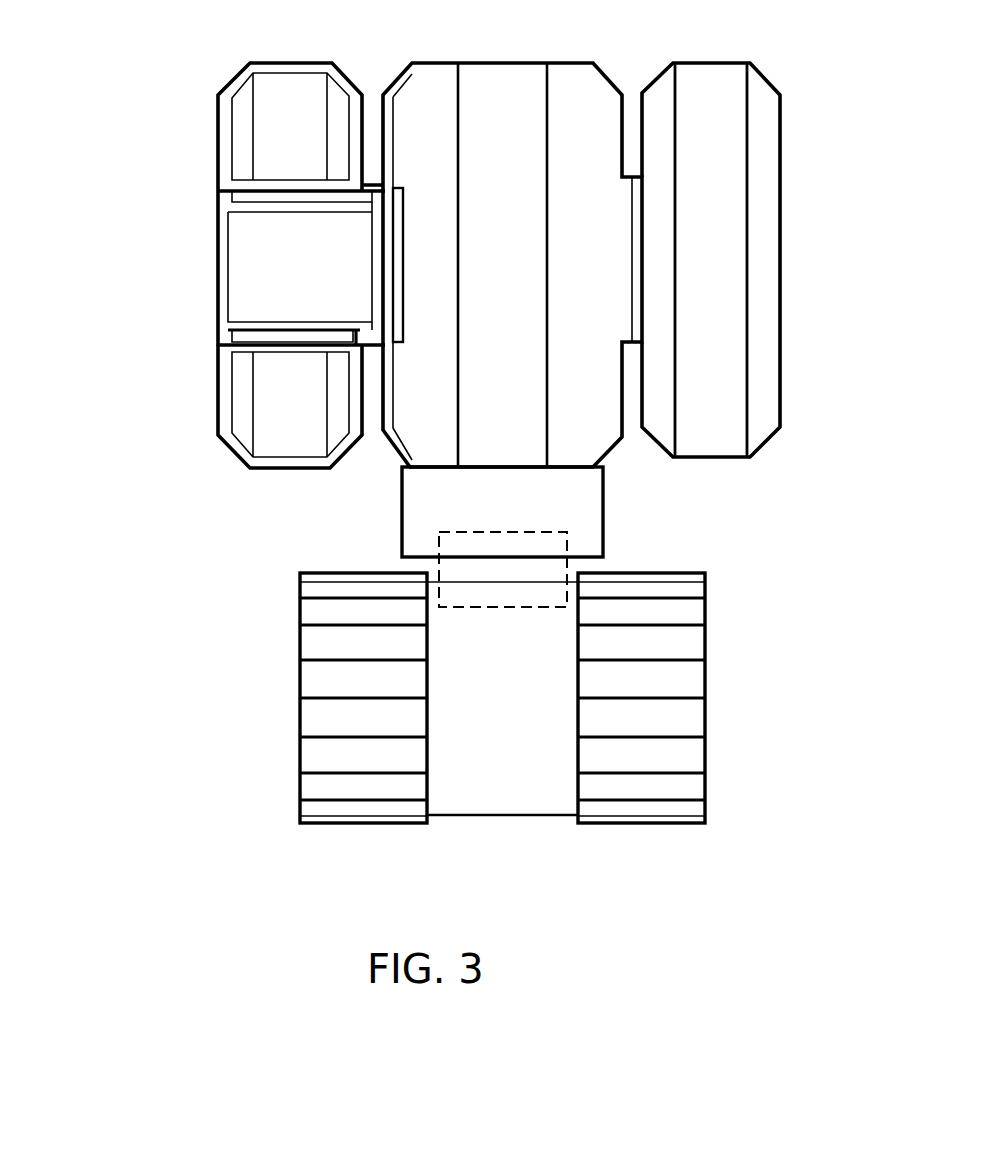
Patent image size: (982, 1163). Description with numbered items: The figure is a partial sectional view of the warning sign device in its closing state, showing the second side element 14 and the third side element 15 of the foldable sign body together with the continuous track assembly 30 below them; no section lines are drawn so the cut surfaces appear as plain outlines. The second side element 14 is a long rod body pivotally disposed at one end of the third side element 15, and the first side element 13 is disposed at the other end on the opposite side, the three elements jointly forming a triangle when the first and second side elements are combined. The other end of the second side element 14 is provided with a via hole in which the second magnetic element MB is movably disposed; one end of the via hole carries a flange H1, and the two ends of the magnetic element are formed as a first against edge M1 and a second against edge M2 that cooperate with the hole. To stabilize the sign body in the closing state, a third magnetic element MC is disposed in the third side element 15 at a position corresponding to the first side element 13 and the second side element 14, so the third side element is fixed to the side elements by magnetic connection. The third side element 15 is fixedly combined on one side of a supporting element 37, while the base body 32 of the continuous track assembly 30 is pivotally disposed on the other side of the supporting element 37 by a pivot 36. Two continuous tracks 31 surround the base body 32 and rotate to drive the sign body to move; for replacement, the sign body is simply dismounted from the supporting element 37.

The first side element 13 is at (725, 63).
The second side element 14 is at (280, 63).
The third side element 15 is at (513, 63).
The flange H1 is at (372, 426).
The second against edge M2 is at (367, 200).
The second magnetic element MB is at (227, 300).
The first against edge M1 is at (237, 337).
The third magnetic element MC is at (400, 313).
The supporting element 37 is at (590, 497).
The pivot 36 is at (567, 558).
The continuous track assembly 30 is at (559, 739).
The continuous track 31 is at (362, 800).
The base body 32 is at (505, 800).